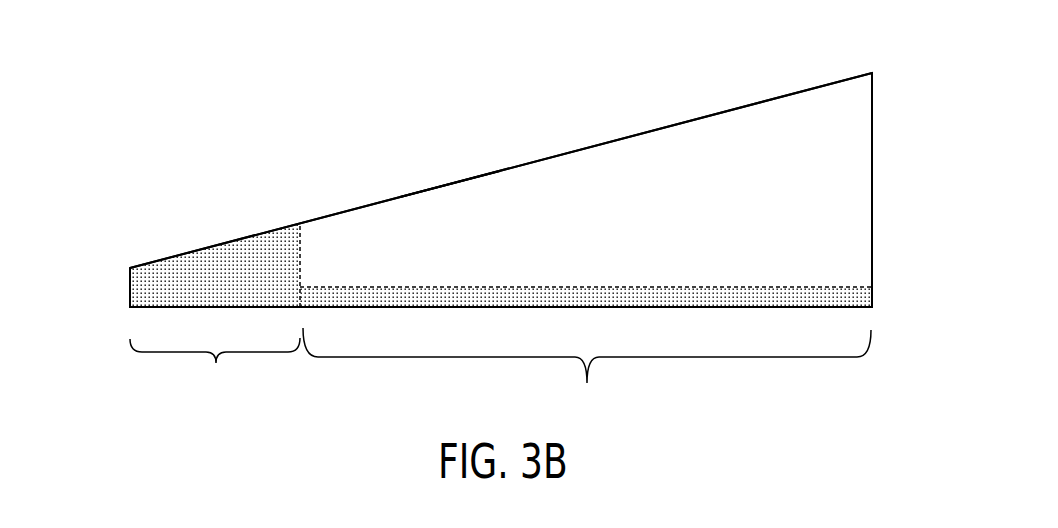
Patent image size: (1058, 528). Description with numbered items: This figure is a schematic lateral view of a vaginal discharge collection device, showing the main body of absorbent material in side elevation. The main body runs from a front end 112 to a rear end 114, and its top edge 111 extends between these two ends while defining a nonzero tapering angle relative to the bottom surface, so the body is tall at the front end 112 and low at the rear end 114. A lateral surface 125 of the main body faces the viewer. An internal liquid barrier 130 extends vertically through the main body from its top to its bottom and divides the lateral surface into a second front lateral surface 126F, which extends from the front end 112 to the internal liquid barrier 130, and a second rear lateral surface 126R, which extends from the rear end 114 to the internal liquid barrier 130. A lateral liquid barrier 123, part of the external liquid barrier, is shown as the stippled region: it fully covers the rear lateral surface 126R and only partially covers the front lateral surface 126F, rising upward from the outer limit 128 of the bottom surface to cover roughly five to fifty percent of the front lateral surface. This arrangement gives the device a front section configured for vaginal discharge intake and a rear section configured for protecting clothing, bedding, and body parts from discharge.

The top edge 111 is at (645, 131).
The front end 112 is at (877, 188).
The rear end 114 is at (127, 290).
The first lateral liquid barrier 123 is at (237, 293).
The first lateral surface 125 is at (446, 168).
The second rear lateral surface 126R is at (215, 373).
The second front lateral surface 126F is at (587, 378).
The second outer limit 128 is at (787, 310).
The internal liquid barrier 130 is at (313, 223).